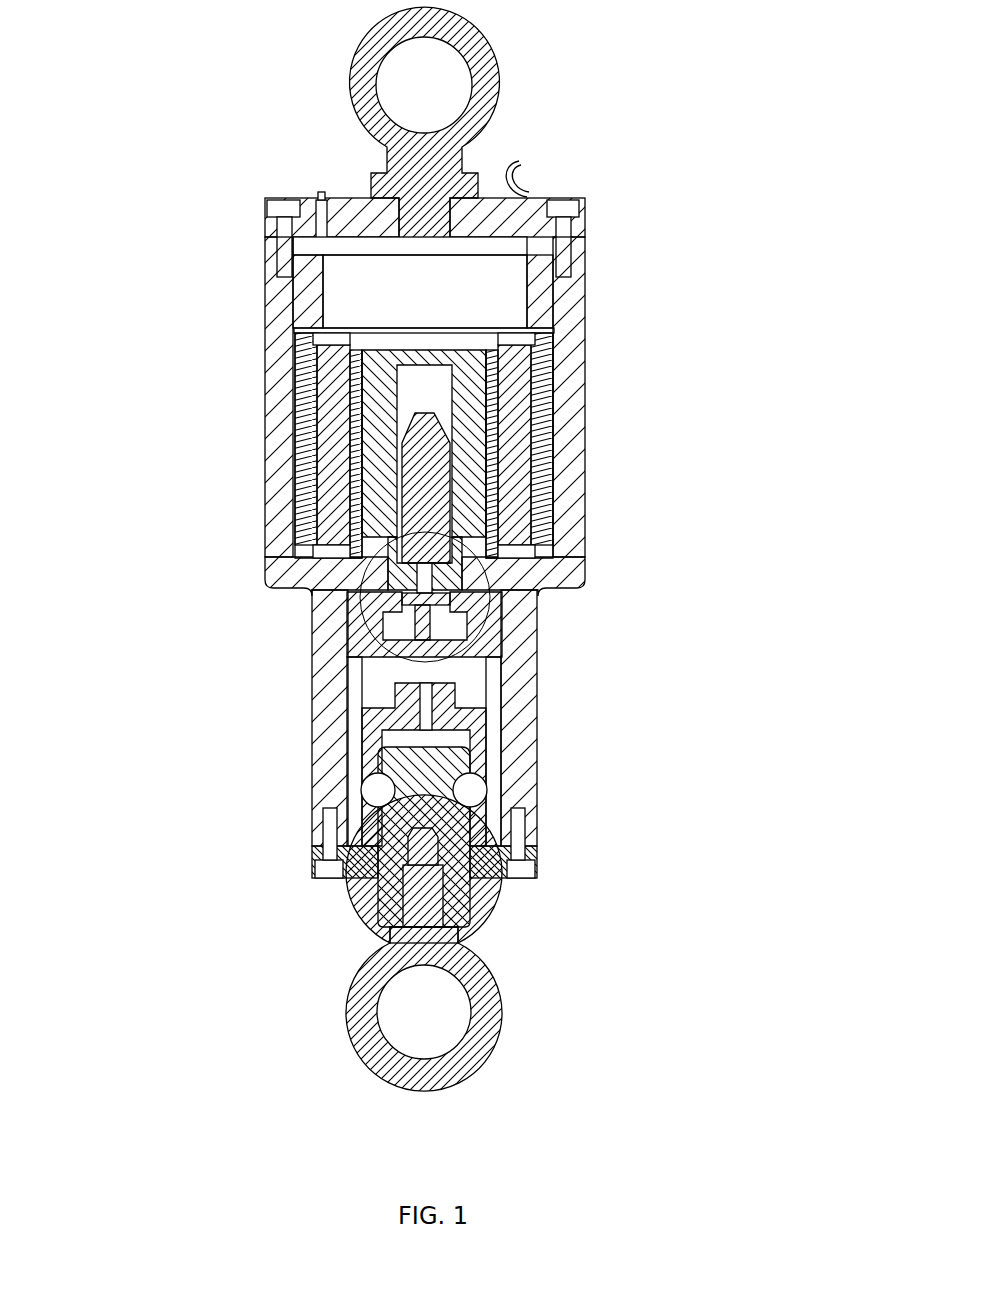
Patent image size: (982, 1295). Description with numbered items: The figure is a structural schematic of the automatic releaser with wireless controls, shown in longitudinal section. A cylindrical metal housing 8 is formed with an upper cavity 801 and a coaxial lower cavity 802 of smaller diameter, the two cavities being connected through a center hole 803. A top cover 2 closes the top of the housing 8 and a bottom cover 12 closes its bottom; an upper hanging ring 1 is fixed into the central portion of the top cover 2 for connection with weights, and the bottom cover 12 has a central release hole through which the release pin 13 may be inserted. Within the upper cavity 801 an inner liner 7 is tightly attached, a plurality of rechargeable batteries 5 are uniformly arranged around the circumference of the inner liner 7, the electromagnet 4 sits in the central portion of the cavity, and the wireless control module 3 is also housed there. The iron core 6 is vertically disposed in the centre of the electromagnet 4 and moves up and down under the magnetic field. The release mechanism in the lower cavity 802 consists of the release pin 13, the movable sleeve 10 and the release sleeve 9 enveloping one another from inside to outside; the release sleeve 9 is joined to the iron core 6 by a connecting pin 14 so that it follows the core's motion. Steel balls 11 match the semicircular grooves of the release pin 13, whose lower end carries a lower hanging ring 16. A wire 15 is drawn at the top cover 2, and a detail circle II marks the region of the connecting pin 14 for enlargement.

The upper hanging ring 1 is at (362, 72).
The top cover 2 is at (266, 200).
The wireless control module 3 is at (366, 288).
The electromagnet 4 is at (378, 372).
The rechargeable batteries 5 is at (338, 410).
The iron core 6 is at (420, 487).
The inner liner 7 is at (352, 520).
The metal housing 8 is at (266, 575).
The upper cavity 801 is at (520, 247).
The lower cavity 802 is at (495, 623).
The center hole 803 is at (453, 577).
The release sleeve 9 is at (373, 647).
The movable sleeve 10 is at (390, 698).
The steel balls 11 is at (367, 792).
The bottom cover 12 is at (367, 860).
The release pin 13 is at (388, 903).
The connecting pin 14 is at (436, 598).
The hook wire 15 is at (522, 162).
The lower hanging ring 16 is at (485, 1002).
The detail view II is at (498, 626).